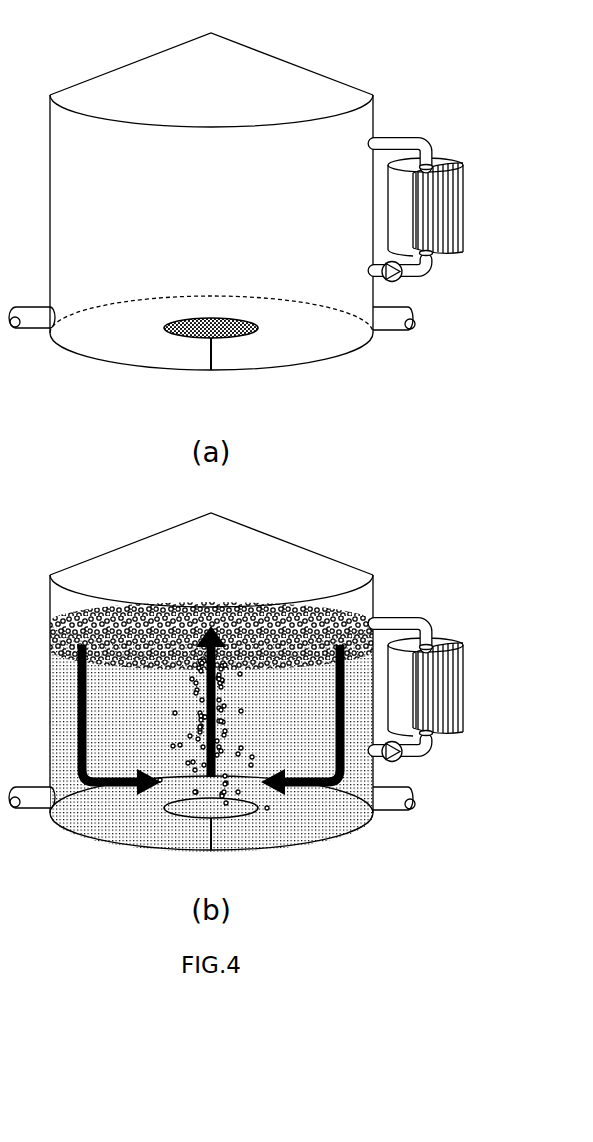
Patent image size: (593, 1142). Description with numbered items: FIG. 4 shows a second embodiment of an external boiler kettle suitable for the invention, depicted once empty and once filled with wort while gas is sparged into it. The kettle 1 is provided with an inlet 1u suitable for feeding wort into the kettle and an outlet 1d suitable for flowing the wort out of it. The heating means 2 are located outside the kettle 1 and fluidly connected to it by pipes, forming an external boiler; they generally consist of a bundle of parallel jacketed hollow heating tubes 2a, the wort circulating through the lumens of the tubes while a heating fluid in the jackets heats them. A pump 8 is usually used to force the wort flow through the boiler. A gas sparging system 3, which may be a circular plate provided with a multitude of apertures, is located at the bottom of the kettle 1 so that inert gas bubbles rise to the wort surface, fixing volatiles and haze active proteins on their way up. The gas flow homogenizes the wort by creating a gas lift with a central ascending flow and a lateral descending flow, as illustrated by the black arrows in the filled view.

The kettle 1 is at (102, 50).
The inlet 1u is at (44, 305).
The outlet 1d is at (387, 332).
The heating means 2 is at (436, 200).
The hollow heating tubes 2a is at (446, 212).
The gas sparging system 3 is at (238, 340).
The pump 8 is at (387, 262).